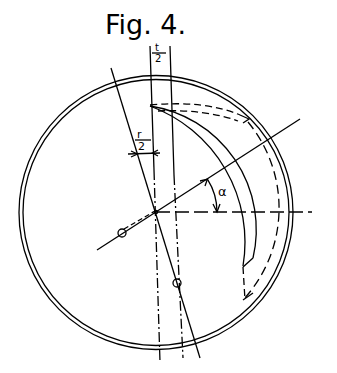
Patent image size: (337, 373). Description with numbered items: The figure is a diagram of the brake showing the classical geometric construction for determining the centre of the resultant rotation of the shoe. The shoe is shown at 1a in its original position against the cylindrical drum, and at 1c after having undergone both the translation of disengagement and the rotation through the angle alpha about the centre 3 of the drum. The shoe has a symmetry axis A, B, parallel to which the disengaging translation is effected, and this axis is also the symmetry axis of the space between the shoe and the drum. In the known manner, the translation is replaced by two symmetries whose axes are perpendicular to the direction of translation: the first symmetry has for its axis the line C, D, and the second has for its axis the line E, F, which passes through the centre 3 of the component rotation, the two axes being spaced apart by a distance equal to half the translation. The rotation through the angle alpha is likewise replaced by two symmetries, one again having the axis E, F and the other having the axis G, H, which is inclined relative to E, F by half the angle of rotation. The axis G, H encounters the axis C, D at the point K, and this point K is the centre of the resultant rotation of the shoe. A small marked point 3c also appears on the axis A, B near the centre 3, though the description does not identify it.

The shoe 1a is at (283, 257).
The shoe 1c is at (247, 248).
The centre 3 is at (154, 211).
The pivot point 3c is at (122, 238).
The symmetry axis A is at (197, 195).
The symmetry axis B is at (301, 134).
The axis C is at (170, 61).
The axis D is at (187, 359).
The axis E is at (150, 61).
The axis F is at (150, 359).
The axis G is at (114, 76).
The axis H is at (212, 352).
The point K is at (185, 279).